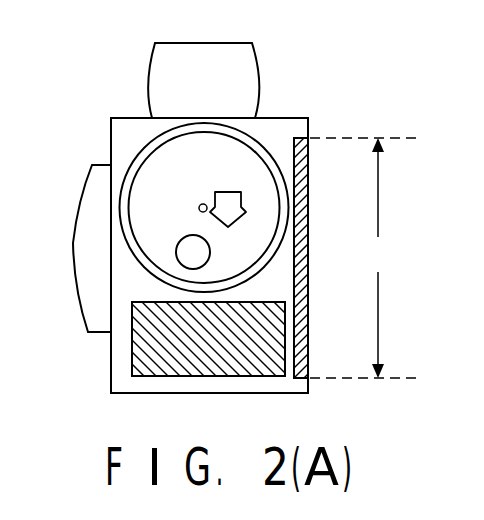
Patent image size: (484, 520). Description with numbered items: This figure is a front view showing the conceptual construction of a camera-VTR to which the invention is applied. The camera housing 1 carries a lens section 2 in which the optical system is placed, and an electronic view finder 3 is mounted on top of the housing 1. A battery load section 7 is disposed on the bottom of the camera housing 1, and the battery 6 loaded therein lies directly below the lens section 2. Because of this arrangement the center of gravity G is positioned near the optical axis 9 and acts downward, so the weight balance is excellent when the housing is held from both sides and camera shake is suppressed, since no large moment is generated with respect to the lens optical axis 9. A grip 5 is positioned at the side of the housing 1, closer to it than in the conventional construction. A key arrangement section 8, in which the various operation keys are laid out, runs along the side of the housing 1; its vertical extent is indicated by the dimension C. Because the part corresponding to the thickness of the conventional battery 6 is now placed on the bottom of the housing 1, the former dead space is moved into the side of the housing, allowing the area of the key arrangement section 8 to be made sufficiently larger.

The camera housing 1 is at (302, 120).
The lens section 2 is at (143, 152).
The electronic view finder 3 is at (252, 45).
The grip 5 is at (88, 172).
The battery 6 is at (140, 378).
The battery load section 7 is at (237, 393).
The key arrangement section 8 is at (303, 137).
The optical axis 9 is at (204, 204).
The center of gravity G is at (185, 240).
The dimension C is at (364, 258).